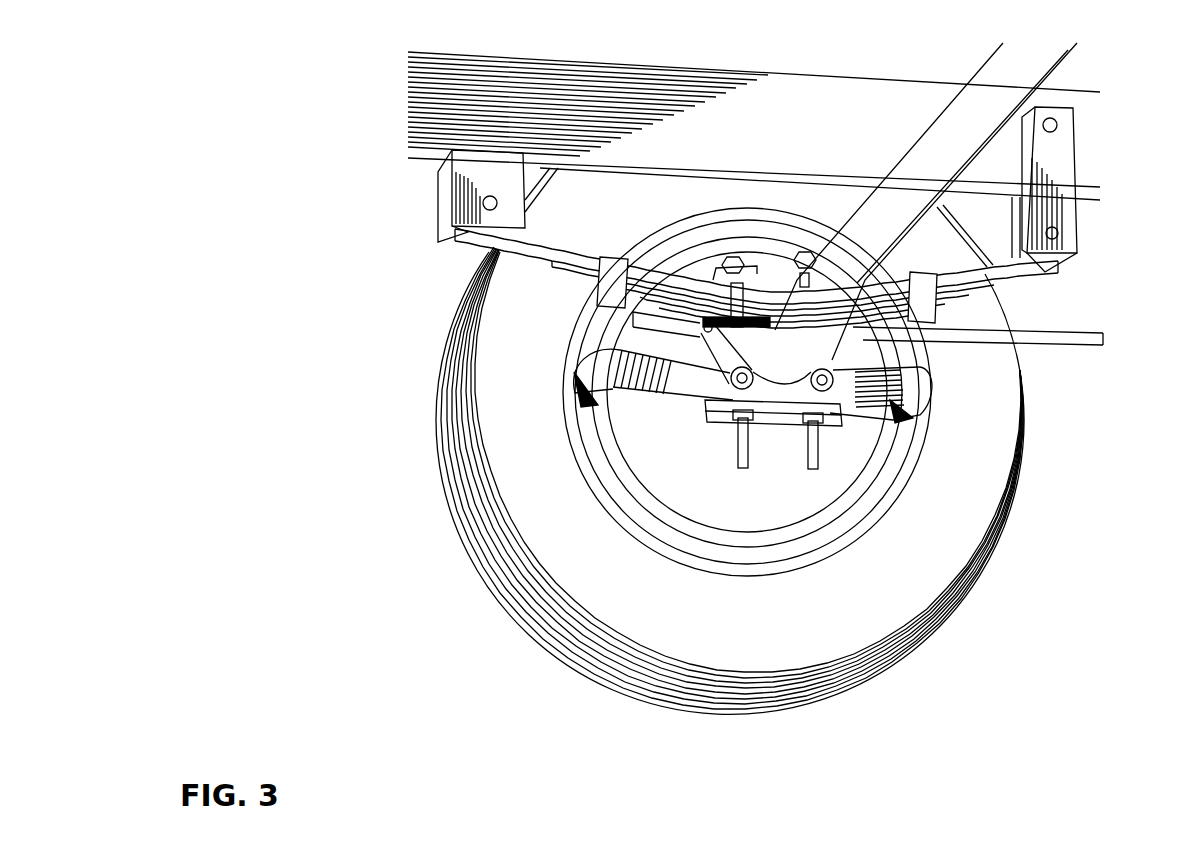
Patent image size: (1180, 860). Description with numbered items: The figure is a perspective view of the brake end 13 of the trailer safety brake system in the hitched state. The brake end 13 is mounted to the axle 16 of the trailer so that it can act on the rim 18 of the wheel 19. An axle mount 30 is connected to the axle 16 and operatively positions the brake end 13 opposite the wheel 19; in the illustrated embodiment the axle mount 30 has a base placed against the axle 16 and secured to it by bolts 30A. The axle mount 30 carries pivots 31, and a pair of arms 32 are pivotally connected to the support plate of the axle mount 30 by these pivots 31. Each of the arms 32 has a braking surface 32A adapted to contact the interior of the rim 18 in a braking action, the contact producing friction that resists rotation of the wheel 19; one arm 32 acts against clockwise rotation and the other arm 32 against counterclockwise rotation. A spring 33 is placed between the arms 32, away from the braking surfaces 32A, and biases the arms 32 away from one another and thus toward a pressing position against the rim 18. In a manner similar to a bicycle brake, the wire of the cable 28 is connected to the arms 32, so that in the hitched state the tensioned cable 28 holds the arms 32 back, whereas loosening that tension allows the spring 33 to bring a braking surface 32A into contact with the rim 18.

The brake end 13 is at (385, 522).
The axle 16 is at (991, 67).
The rim 18 is at (903, 473).
The wheel 19 is at (997, 444).
The cable 28 is at (950, 302).
The axle mount 30 is at (778, 403).
The bolts 30A is at (745, 470).
The pivots 31 is at (822, 378).
The arms 32 is at (678, 383).
The braking surfaces 32A is at (585, 393).
The spring 33 is at (748, 350).